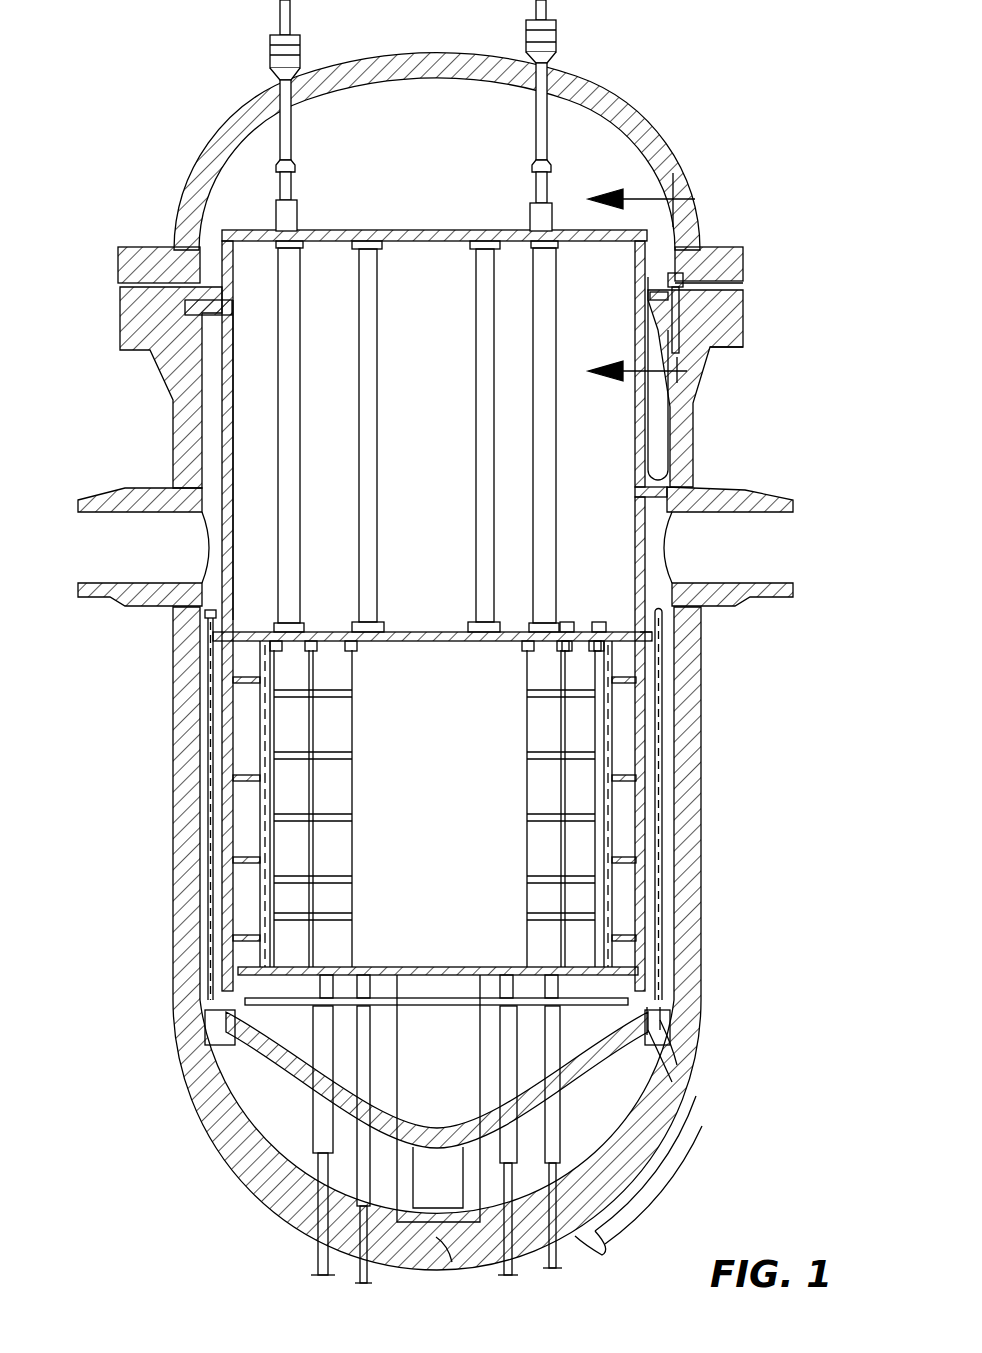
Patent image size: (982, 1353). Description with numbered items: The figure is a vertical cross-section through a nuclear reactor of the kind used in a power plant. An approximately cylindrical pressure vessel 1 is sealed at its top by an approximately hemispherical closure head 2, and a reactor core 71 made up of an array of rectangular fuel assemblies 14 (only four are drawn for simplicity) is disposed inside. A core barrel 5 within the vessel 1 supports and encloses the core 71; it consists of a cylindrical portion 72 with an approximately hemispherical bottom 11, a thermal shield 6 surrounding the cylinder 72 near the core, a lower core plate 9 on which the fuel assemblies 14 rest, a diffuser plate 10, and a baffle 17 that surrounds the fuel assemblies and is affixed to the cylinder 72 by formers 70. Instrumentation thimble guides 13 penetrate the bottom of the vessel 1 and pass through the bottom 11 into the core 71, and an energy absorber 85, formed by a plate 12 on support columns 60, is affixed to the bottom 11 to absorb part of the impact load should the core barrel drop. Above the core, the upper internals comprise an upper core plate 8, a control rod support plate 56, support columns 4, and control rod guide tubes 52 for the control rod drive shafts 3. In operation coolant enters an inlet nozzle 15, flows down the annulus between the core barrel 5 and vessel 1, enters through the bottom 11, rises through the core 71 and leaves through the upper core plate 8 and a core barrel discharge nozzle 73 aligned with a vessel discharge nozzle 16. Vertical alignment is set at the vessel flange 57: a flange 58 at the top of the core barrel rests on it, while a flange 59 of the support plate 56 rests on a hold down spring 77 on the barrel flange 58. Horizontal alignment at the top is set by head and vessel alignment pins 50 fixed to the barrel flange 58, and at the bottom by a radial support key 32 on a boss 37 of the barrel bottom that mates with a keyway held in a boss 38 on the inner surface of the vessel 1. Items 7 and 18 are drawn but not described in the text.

The pressure vessel 1 is at (703, 898).
The closure head 2 is at (624, 132).
The control rod drive shaft 3 is at (534, 185).
The support column 4 is at (475, 424).
The core barrel 5 is at (634, 432).
The thermal shield 6 is at (665, 758).
The alignment pins 7 is at (606, 622).
The upper core plate 8 is at (417, 630).
The lower core plate 9 is at (395, 966).
The diffuser plate 10 is at (437, 1007).
The bottom 11 is at (585, 1102).
The plate 12 is at (458, 1292).
The instrumentation thimble guide 13 is at (598, 1243).
The fuel assembly 14 is at (312, 728).
The inlet nozzle 15 is at (125, 486).
The discharge nozzle 16 is at (750, 487).
The baffle 17 is at (262, 740).
The downcomer 18 is at (633, 624).
The radial support key 32 is at (660, 1045).
The boss 37 is at (630, 1090).
The boss 38 is at (683, 1068).
The head and vessel alignment pin 50 is at (662, 302).
The control rod guide tube 52 is at (302, 374).
The control rod support plate 56 is at (419, 229).
The vessel flange 57 is at (738, 350).
The core barrel flange 58 is at (655, 328).
The flange 59 is at (648, 272).
The support column 60 is at (466, 1190).
The former 70 is at (245, 930).
The reactor core 71 is at (462, 815).
The cylindrical portion 72 is at (236, 462).
The discharge nozzle 73 is at (650, 500).
The hold down spring 77 is at (648, 296).
The energy absorber 85 is at (388, 1245).